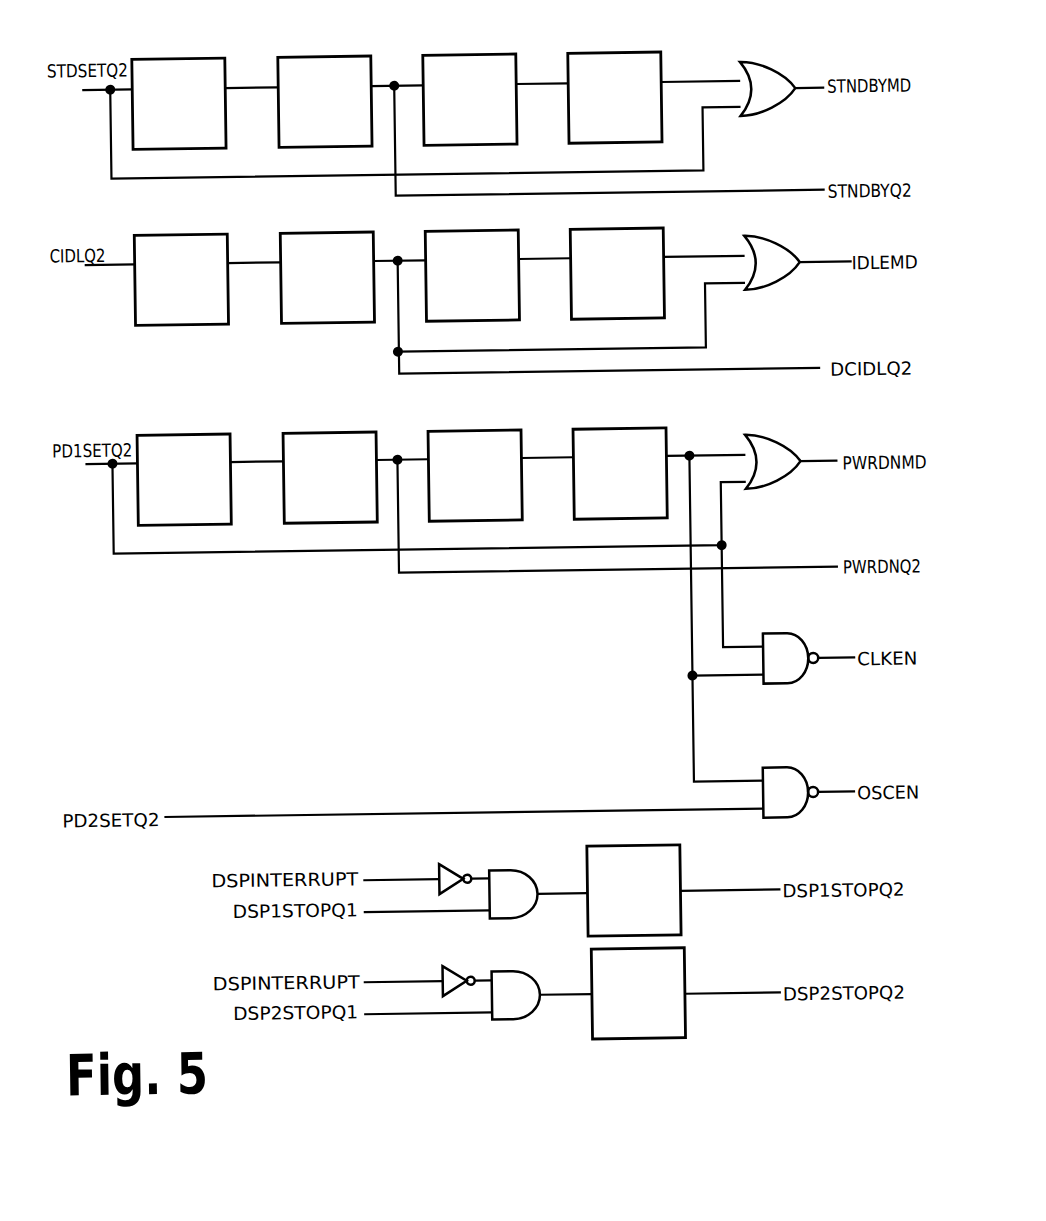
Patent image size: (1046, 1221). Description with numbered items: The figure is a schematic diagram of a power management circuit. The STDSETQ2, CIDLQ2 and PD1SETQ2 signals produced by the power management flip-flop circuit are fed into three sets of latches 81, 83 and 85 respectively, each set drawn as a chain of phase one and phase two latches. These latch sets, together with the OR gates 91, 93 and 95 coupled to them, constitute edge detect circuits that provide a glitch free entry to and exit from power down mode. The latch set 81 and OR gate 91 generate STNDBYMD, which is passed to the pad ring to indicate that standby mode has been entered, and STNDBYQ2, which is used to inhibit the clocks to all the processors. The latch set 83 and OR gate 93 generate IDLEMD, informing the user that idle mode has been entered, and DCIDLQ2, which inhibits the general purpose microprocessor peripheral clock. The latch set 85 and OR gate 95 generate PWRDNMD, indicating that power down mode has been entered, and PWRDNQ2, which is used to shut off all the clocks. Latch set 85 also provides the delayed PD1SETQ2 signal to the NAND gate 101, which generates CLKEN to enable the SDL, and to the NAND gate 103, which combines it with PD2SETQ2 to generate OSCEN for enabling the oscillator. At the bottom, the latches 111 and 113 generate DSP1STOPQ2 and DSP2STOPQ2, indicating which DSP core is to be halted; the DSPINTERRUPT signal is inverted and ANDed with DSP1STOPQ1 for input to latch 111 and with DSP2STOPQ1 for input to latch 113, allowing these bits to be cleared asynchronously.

The set of latches 81 is at (694, 41).
The OR gate 91 is at (776, 69).
The set of latches 83 is at (687, 237).
The OR gate 93 is at (782, 252).
The set of latches 85 is at (690, 432).
The OR gate 95 is at (791, 459).
The NAND gate 101 is at (795, 640).
The NAND gate 103 is at (790, 779).
The latch 111 is at (678, 877).
The latch 113 is at (682, 967).